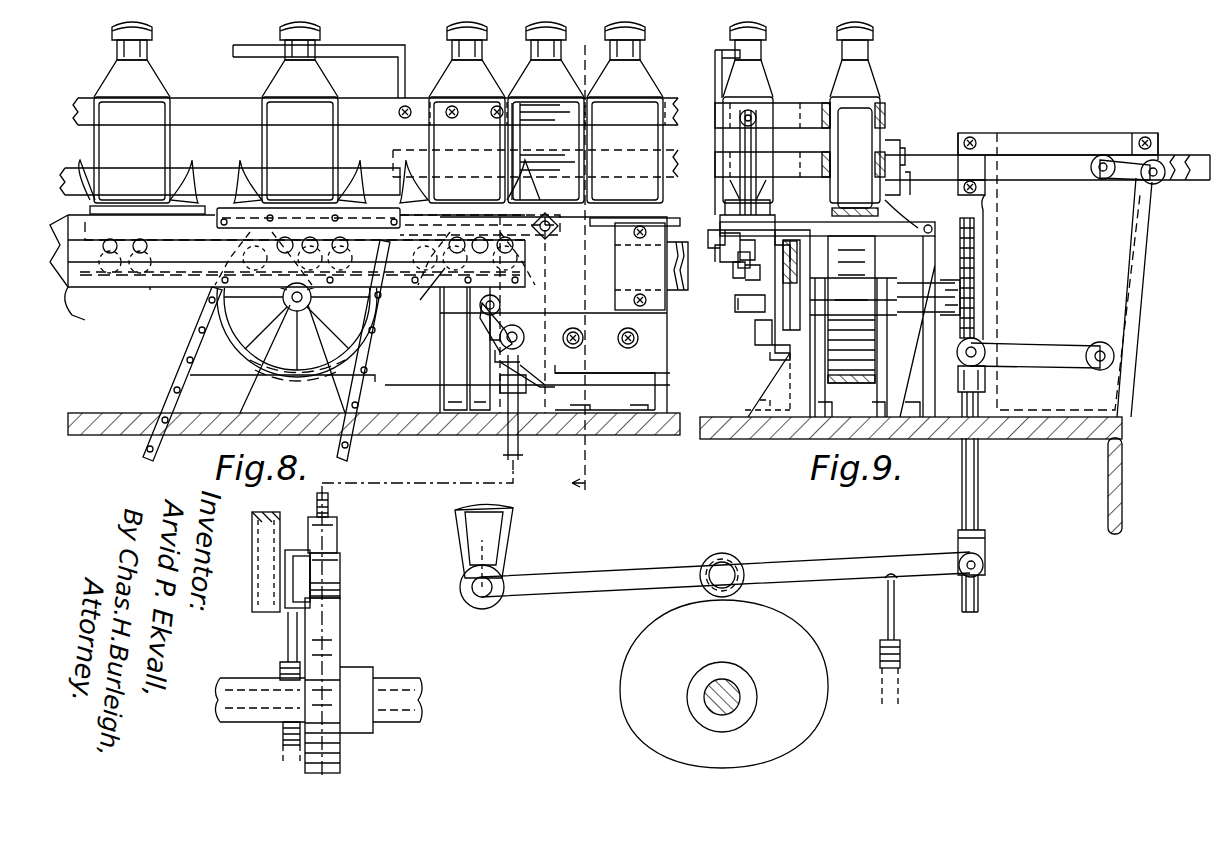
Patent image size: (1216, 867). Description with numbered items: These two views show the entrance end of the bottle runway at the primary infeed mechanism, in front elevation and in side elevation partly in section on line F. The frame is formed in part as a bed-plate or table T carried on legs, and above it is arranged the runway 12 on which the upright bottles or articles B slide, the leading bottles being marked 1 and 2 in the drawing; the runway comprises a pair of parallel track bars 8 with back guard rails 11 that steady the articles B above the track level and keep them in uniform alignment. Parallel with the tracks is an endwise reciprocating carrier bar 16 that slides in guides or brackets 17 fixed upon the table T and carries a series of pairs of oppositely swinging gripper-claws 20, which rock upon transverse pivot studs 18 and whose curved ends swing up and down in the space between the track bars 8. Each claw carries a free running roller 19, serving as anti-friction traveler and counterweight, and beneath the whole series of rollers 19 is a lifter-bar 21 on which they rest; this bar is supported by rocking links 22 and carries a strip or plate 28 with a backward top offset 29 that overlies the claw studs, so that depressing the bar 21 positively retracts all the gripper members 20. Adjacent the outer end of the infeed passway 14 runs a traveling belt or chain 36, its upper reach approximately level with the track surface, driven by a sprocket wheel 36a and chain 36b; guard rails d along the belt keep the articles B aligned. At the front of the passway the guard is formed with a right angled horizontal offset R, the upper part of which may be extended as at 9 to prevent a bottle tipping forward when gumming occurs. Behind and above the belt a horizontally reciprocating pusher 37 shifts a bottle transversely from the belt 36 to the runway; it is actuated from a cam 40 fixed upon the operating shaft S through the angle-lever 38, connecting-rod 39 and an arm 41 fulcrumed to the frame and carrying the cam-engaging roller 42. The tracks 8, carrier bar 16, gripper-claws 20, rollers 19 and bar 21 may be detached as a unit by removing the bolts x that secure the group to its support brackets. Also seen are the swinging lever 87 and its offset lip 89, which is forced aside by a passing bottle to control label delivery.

In FIG. 8, the bottle 1 is at (467, 30).
In FIG. 9, the bottle 1 is at (747, 30).
In FIG. 8, the bottle 2 is at (299, 30).
In FIG. 8, the track bars 8 is at (215, 240).
In FIG. 8, the horizontal extension 9 is at (346, 50).
In FIG. 9, the horizontal extension 9 is at (714, 52).
In FIG. 8, the back guard rails 11 is at (225, 108).
In FIG. 9, the runway 12 is at (712, 238).
In FIG. 9, the infeed passway 14 is at (761, 186).
In FIG. 8, the reciprocating bar 16 is at (553, 315).
In FIG. 9, the reciprocating bar 16 is at (790, 262).
In FIG. 8, the guides or brackets 17 is at (651, 266).
In FIG. 8, the transverse pivot studs 18 is at (427, 293).
In FIG. 9, the roller 19 is at (735, 270).
In FIG. 8, the gripper-claws 20 is at (195, 185).
In FIG. 8, the lifter-bar 21 is at (130, 288).
In FIG. 9, the lifter-bar 21 is at (740, 290).
In FIG. 8, the rocking links 22 is at (545, 313).
In FIG. 9, the rocking links 22 is at (765, 325).
In FIG. 8, the strip or plate 28 is at (140, 277).
In FIG. 9, the top offset or flange 29 is at (738, 258).
In FIG. 8, the traveling belt or chain 36 is at (678, 212).
In FIG. 9, the traveling belt or chain 36 is at (875, 232).
In FIG. 9, the sprocket wheel 36a is at (975, 262).
In FIG. 8, the chain 36b is at (172, 380).
In FIG. 9, the chain 36b is at (990, 593).
In FIG. 9, the pusher 37 is at (1010, 160).
In FIG. 9, the angle-lever 38 is at (1125, 290).
In FIG. 8, the connecting-rod 39 is at (519, 450).
In FIG. 9, the connecting-rod 39 is at (975, 455).
In FIG. 8, the cam 40 is at (330, 650).
In FIG. 9, the cam 40 is at (810, 682).
In FIG. 8, the arm 41 is at (338, 590).
In FIG. 9, the arm 41 is at (848, 565).
In FIG. 8, the cam-engaging roller 42 is at (328, 572).
In FIG. 9, the cam-engaging roller 42 is at (722, 560).
In FIG. 8, the swinging lever 87 is at (79, 307).
In FIG. 8, the offset lip 89 is at (150, 208).
In FIG. 8, the bottles or articles B is at (378, 112).
In FIG. 9, the bottles or articles B is at (810, 119).
In FIG. 8, the right angled horizontal offset R is at (532, 149).
In FIG. 9, the right angled horizontal offset R is at (718, 115).
In FIG. 8, the table T is at (415, 437).
In FIG. 9, the table T is at (911, 475).
In FIG. 8, the section line F is at (581, 272).
In FIG. 8, the operating shaft S is at (390, 690).
In FIG. 9, the operating shaft S is at (715, 695).
In FIG. 9, the guard rails d is at (892, 165).
In FIG. 8, the bolts x is at (580, 339).